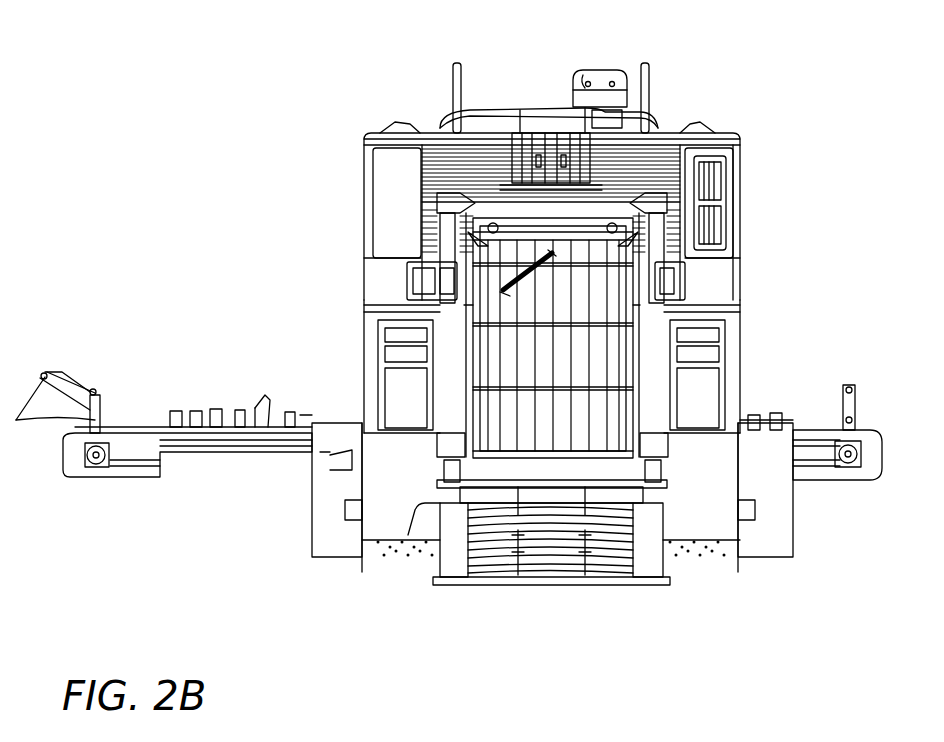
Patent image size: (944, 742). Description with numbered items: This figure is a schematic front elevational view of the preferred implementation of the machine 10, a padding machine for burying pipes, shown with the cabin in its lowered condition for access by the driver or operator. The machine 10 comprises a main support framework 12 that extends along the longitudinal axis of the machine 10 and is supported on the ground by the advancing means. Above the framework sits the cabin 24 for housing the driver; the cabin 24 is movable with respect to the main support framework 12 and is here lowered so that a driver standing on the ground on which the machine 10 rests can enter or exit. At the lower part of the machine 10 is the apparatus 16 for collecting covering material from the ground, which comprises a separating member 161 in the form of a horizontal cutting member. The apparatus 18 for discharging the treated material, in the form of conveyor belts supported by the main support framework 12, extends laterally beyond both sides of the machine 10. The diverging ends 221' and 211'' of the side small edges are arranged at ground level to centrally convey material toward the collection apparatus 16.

The machine 10 is at (294, 82).
The main support framework 12 is at (391, 106).
The apparatus for the collection of a material 16 is at (622, 600).
The apparatus for discharging the material 18 is at (213, 370).
The cabin 24 is at (598, 284).
The member for separating said material 161 is at (495, 548).
The left lower housing 211'' is at (282, 497).
The end of side small edge 221' is at (813, 497).